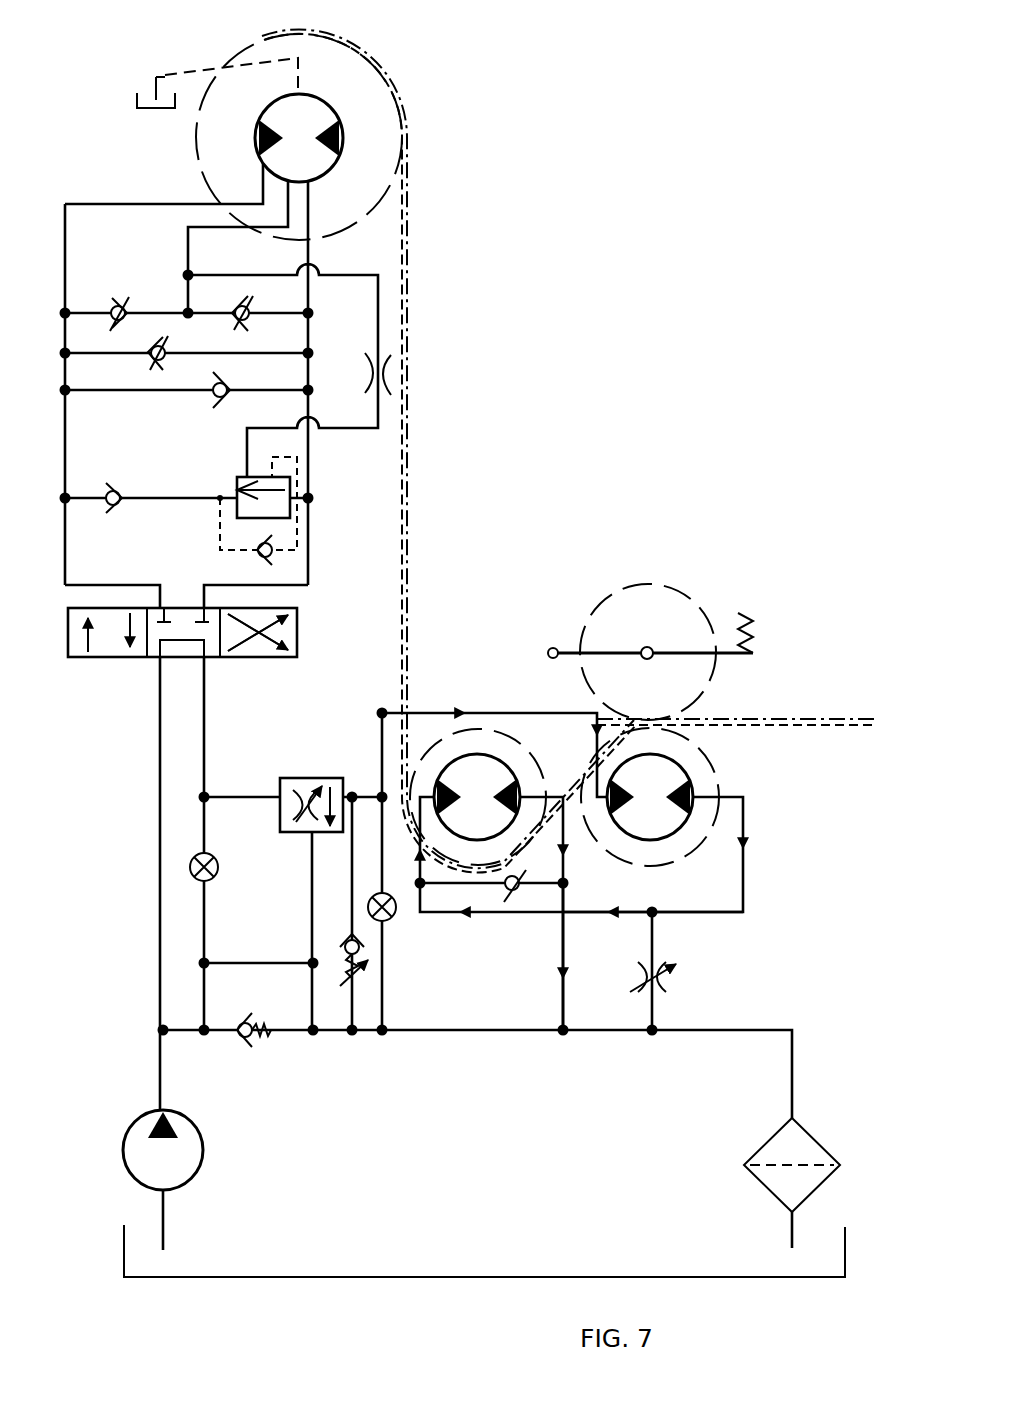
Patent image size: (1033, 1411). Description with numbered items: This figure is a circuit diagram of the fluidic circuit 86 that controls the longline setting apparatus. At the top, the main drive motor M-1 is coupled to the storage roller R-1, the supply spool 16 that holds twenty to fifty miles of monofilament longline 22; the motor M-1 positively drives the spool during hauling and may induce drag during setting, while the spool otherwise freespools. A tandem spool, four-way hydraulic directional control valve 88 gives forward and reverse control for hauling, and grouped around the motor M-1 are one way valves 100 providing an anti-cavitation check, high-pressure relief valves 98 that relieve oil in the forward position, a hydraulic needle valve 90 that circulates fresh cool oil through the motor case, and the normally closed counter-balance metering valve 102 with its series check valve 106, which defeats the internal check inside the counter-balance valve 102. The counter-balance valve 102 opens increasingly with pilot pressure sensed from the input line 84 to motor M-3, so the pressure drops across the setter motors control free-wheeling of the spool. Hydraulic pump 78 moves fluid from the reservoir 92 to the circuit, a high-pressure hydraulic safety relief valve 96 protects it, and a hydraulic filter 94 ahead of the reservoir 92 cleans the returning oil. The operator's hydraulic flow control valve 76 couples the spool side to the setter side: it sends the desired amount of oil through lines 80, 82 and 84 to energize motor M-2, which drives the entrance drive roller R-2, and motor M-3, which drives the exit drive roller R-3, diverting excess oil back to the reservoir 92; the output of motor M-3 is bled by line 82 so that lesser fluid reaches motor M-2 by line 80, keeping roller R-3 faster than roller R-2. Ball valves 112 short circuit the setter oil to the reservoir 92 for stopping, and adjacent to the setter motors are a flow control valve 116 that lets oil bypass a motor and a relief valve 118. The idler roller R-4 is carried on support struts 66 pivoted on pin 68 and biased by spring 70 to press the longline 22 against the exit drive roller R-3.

The supply spool 16 is at (252, 44).
The longline 22 is at (820, 718).
The support struts 66 is at (618, 650).
The pin 68 is at (553, 648).
The spring 70 is at (752, 628).
The flow control valve 76 is at (285, 778).
The hydraulic pump 78 is at (203, 1150).
The line 80 is at (560, 905).
The line 82 is at (655, 917).
The line 84 is at (536, 817).
The fluidic circuit 86 is at (140, 664).
The four-way hydraulic directional control valve 88 is at (275, 658).
The hydraulic needle valve 90 is at (365, 372).
The reservoir 92 is at (147, 97).
The hydraulic filter 94 is at (760, 1150).
The high-pressure hydraulic safety relief valve 96 is at (237, 1040).
The high-pressure relief valves 98 is at (150, 362).
The one way valves 100 is at (112, 300).
The counter-balance metering valve 102 is at (240, 478).
The check valve 106 is at (112, 512).
The ball valves 112 is at (221, 868).
The flow control valve 116 is at (673, 980).
The relief valve 118 is at (340, 985).
The motor M-1 is at (336, 117).
The motor M-2 is at (462, 770).
The motor M-3 is at (677, 773).
The roller R-1 is at (371, 216).
The entrance drive roller R-2 is at (487, 725).
The exit drive roller R-3 is at (720, 775).
The idler roller R-4 is at (660, 583).